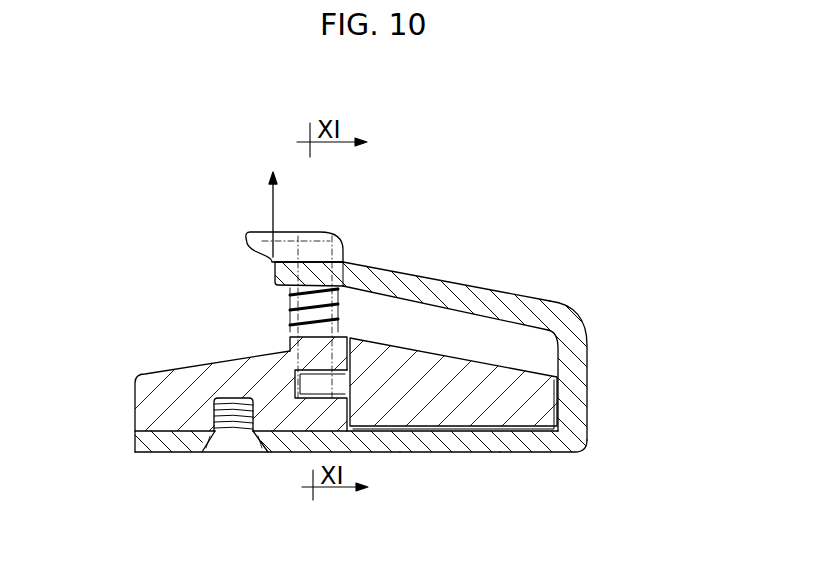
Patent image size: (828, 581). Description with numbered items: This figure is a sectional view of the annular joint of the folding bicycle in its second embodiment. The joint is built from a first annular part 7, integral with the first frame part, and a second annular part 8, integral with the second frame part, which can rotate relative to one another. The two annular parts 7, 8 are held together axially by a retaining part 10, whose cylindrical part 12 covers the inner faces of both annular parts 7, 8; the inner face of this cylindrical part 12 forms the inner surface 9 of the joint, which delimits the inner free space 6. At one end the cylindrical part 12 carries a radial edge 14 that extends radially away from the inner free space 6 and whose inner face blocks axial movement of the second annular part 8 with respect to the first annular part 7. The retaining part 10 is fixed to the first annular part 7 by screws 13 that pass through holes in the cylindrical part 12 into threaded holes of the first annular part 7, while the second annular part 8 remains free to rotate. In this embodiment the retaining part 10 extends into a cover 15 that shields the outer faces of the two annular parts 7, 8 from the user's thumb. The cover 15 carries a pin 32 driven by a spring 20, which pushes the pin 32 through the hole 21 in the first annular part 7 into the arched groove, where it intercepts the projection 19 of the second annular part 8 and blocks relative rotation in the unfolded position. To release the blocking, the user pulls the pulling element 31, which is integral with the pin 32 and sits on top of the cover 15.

The inner free space 6 is at (356, 365).
The first annular part 7 is at (184, 445).
The second annular part 8 is at (505, 380).
The inner surface 9 is at (420, 452).
The retaining part 10 is at (483, 463).
The cylindrical part 12 is at (525, 445).
The screws 13 is at (227, 442).
The radial edge 14 is at (584, 349).
The cover 15 is at (467, 283).
The projection 19 is at (317, 386).
The spring 20 is at (265, 313).
The hole 21 is at (310, 357).
The pulling element 31 is at (310, 232).
The pin 32 is at (265, 313).